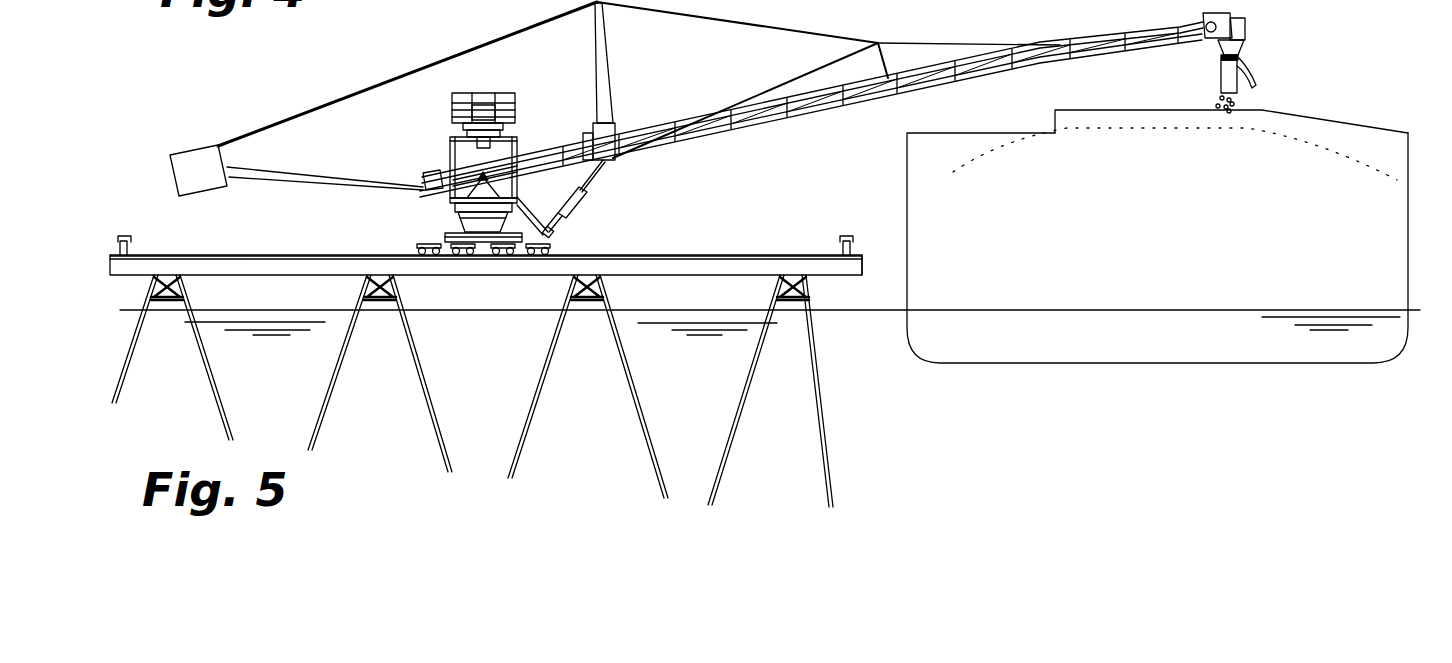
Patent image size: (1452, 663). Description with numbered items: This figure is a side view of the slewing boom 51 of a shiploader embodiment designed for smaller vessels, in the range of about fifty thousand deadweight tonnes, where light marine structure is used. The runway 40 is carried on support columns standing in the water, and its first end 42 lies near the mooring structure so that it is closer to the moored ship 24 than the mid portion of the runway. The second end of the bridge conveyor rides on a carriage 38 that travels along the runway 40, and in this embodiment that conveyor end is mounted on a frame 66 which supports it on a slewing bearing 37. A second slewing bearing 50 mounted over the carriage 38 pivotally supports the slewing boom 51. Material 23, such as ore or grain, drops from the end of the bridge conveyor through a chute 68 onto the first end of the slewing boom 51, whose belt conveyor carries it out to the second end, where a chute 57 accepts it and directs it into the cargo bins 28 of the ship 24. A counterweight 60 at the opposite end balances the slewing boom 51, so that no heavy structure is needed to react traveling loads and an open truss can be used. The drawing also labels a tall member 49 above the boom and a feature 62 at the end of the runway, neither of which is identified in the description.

The materials 23 is at (1220, 106).
The ship 24 is at (966, 282).
The cargo bins 28 is at (1123, 110).
The slewing bearing 37 is at (516, 130).
The carriage 38 is at (402, 242).
The runway 40 is at (686, 250).
The first end 42 is at (818, 254).
The mast 49 is at (613, 97).
The slewing bearing 50 is at (457, 219).
The slewing boom 51 is at (825, 115).
The chute 57 is at (1255, 70).
The counterweight 60 is at (171, 155).
The pier edge 62 is at (866, 268).
The frame 66 is at (450, 158).
The chute 68 is at (456, 151).